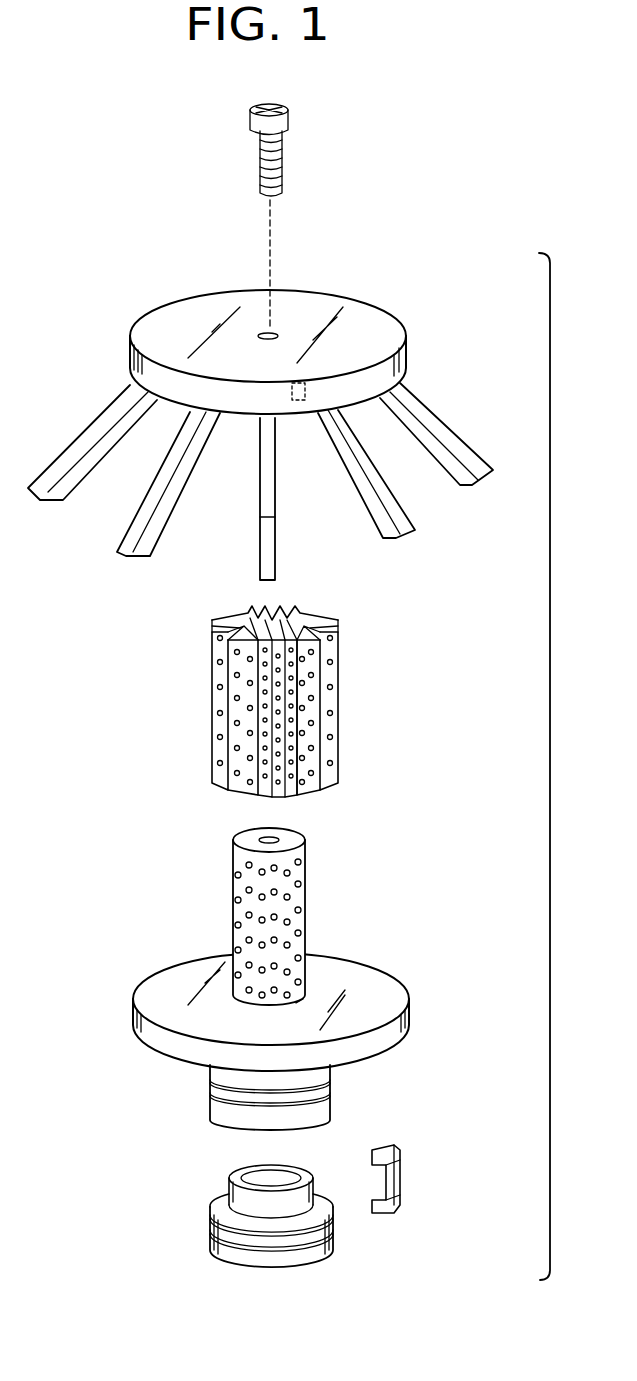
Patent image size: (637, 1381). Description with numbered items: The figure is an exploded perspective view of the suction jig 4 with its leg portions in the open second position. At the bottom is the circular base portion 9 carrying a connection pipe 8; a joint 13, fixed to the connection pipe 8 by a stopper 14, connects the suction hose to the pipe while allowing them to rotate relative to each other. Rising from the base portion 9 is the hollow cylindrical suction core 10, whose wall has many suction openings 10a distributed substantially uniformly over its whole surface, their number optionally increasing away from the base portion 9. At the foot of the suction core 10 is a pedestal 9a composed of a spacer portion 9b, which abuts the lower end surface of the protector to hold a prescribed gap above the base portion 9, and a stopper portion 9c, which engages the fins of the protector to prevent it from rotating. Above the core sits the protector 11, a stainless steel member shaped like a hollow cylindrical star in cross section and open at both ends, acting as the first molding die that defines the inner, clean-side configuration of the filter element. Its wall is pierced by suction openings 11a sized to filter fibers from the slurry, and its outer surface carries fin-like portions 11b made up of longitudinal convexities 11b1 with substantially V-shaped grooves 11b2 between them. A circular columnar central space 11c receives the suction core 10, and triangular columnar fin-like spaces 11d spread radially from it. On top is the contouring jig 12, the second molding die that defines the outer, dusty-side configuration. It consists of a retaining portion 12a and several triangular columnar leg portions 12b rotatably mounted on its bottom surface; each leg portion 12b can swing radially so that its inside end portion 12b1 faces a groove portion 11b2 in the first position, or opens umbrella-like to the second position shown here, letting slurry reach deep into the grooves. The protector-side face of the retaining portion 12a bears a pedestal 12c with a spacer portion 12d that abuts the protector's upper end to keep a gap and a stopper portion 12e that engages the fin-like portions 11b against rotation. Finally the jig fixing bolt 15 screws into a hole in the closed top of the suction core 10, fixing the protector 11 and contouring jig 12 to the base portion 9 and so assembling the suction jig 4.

The suction jig 4 is at (560, 700).
The jig fixing bolt 15 is at (291, 133).
The contouring jig 12 is at (260, 386).
The retaining portion 12a is at (395, 335).
The leg portions 12b is at (117, 548).
The radially inside end portion 12b1 is at (165, 518).
The pedestal 12c is at (318, 382).
The spacer portion 12d is at (300, 385).
The stopper portion 12e is at (305, 386).
The protector 11 is at (329, 685).
The suction openings 11a is at (222, 735).
The fin-like portions 11b is at (371, 718).
The convexities 11b1 is at (340, 675).
The V-shaped grooves 11b2 is at (305, 722).
The central space 11c is at (300, 604).
The fin-like spaces 11d is at (315, 615).
The suction core 10 is at (271, 916).
The suction openings 10a is at (290, 895).
The base portion 9 is at (261, 983).
The pedestal 9a is at (322, 988).
The spacer portion 9b is at (320, 991).
The stopper portion 9c is at (302, 999).
The connection pipe 8 is at (212, 1075).
The joint 13 is at (210, 1208).
The stopper 14 is at (393, 1147).